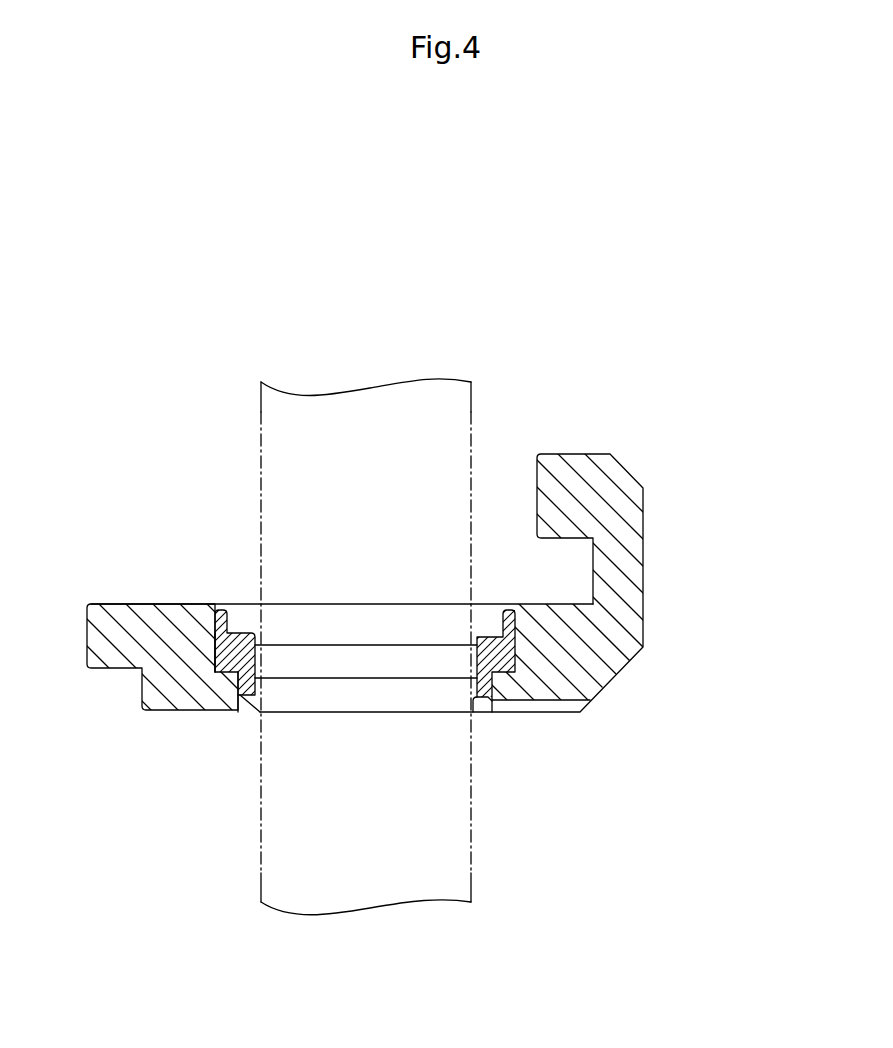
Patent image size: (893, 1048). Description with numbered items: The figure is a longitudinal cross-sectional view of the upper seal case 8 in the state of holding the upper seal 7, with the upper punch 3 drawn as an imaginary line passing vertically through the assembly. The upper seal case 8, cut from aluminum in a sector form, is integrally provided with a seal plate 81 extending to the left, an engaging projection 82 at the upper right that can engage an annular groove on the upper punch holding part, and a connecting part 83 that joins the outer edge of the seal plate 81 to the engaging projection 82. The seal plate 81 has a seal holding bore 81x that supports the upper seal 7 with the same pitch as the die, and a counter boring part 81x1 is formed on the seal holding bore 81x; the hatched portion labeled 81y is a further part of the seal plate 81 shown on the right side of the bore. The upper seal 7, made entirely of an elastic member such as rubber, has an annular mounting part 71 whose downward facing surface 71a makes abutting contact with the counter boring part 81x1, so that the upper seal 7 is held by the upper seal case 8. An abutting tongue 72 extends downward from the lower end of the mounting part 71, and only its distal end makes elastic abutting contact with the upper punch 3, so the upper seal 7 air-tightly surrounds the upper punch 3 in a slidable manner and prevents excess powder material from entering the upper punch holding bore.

The upper punch 3 is at (471, 884).
The upper seal 7 is at (362, 634).
The annular mounting part 71 is at (403, 670).
The downward facing surface 71a is at (217, 673).
The abutting tongue 72 is at (251, 713).
The upper seal case 8 is at (546, 442).
The seal plate 81 is at (167, 692).
The seal holding bore 81x is at (224, 611).
The counter boring part 81x1 is at (214, 643).
The seal case outer projection 81y is at (537, 703).
The engaging projection 82 is at (571, 482).
The connecting part 83 is at (622, 574).